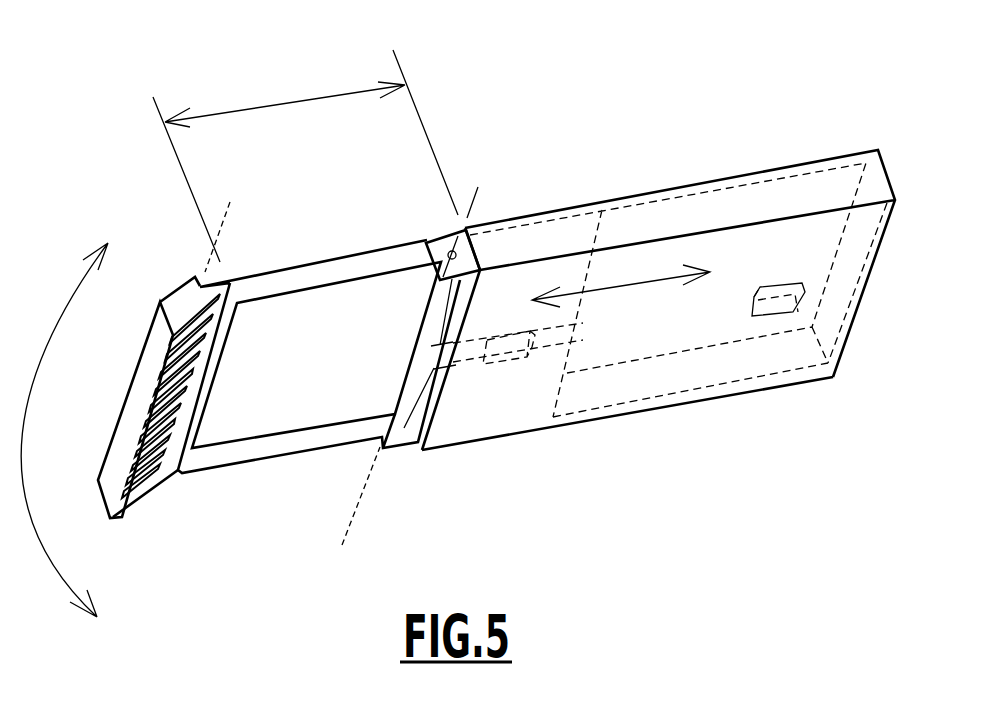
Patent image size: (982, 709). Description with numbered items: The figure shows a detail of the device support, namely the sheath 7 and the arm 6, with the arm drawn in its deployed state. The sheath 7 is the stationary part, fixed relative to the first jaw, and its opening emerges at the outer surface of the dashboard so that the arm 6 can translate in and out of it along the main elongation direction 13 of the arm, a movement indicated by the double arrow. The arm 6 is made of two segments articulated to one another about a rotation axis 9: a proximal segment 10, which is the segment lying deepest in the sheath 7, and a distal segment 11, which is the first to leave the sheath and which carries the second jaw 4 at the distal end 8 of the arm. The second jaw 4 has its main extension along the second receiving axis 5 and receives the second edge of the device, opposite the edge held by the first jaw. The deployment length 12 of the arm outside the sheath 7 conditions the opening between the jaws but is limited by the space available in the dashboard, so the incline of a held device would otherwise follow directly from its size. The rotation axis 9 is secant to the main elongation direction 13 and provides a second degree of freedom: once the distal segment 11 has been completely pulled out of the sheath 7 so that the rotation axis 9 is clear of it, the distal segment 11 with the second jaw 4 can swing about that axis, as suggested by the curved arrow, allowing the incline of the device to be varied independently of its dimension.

The second jaw 4 is at (162, 390).
The second receiving axis 5 is at (223, 220).
The arm 6 is at (325, 280).
The sheath 7 is at (788, 168).
The distal end 8 is at (150, 378).
The rotation axis 9 is at (452, 251).
The proximal segment 10 is at (500, 397).
The distal segment 11 is at (272, 417).
The deployment length 12 is at (275, 100).
The main elongation direction 13 is at (587, 290).